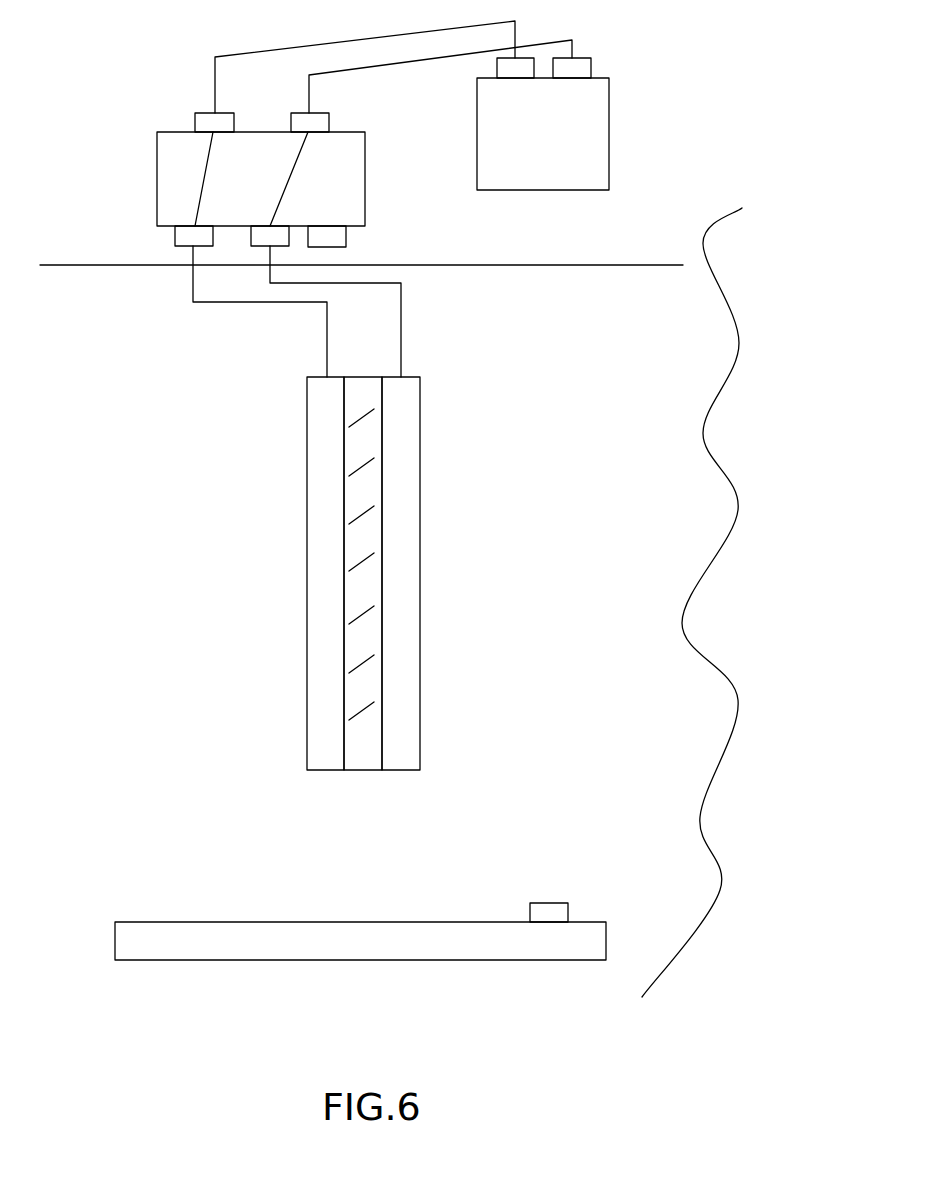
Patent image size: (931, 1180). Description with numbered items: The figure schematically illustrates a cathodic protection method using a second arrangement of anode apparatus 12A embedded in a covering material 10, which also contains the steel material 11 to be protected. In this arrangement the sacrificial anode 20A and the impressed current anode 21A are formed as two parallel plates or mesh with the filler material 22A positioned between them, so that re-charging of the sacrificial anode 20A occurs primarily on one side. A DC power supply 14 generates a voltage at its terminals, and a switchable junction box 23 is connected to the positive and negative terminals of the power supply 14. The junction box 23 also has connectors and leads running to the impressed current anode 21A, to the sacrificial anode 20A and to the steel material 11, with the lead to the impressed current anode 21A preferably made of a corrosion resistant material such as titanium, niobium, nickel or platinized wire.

The covering material 10 is at (685, 368).
The steel material 11 is at (317, 937).
The anode apparatus 12A is at (396, 573).
The DC power supply 14 is at (580, 142).
The sacrificial anode 20A is at (400, 473).
The impressed current anode 21A is at (327, 598).
The filler material 22A is at (358, 740).
The switchable junction box 23 is at (182, 173).